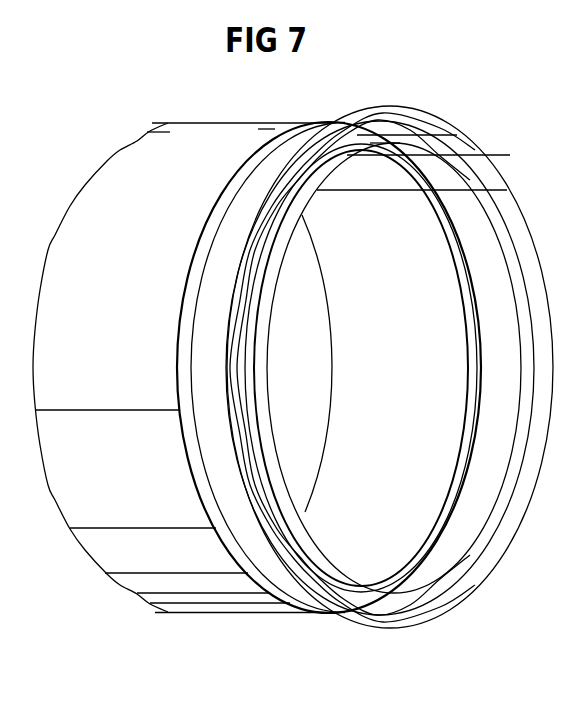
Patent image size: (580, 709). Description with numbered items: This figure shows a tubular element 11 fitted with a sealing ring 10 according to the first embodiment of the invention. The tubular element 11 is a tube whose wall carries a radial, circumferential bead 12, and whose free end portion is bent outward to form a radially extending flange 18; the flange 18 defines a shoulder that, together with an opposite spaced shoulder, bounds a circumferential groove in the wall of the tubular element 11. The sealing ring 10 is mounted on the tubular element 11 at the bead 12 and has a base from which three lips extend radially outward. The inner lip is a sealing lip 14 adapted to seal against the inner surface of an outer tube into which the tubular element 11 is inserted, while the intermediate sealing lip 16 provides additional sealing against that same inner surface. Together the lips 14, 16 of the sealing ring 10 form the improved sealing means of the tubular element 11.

The sealing ring 10 is at (293, 371).
The tubular element 11 is at (214, 143).
The radial circumferential bead 12 is at (308, 121).
The sealing lip 14 is at (401, 107).
The intermediate sealing lip 16 is at (358, 118).
The radially extending flange 18 is at (480, 150).